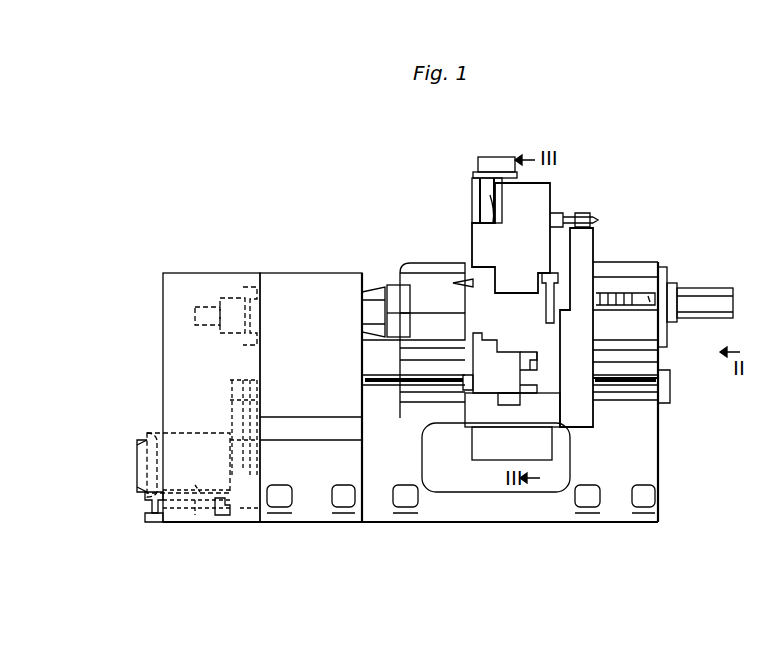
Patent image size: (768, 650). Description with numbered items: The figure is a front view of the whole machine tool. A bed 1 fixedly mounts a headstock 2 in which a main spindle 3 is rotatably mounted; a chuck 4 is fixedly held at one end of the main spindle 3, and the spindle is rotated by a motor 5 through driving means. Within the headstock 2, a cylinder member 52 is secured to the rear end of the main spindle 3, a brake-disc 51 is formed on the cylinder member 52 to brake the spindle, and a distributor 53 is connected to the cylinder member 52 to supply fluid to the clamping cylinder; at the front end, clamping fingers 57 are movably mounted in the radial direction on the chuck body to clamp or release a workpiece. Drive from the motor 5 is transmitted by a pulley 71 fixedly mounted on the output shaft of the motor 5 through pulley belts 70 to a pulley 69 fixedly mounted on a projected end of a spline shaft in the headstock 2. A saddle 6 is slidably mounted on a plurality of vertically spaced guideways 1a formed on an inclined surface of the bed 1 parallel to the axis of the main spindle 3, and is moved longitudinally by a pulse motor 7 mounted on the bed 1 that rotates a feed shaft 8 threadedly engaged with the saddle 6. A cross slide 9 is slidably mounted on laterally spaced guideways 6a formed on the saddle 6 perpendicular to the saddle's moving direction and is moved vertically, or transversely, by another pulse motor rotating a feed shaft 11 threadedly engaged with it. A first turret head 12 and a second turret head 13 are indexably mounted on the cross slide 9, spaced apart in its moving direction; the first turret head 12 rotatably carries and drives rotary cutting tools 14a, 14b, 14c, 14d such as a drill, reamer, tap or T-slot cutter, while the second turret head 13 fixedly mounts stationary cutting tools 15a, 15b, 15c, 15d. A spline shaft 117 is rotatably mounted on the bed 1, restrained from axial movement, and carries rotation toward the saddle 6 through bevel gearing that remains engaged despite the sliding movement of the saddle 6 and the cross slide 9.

The bed 1 is at (375, 505).
The guideways 1a is at (646, 295).
The headstock 2 is at (300, 275).
The main spindle 3 is at (372, 290).
The chuck 4 is at (392, 290).
The motor 5 is at (197, 508).
The saddle 6 is at (585, 410).
The guideways 6a is at (505, 410).
The pulse motor 7 is at (705, 300).
The feed shaft 8 is at (622, 292).
The cross slide 9 is at (490, 405).
The feed shaft 11 is at (500, 195).
The first turret head 12 is at (482, 235).
The second turret head 13 is at (525, 405).
The rotary cutting tool 14a is at (462, 280).
The rotary cutting tool 14b is at (640, 380).
The rotary cutting tool 14c is at (585, 212).
The rotary cutting tool 14d is at (480, 178).
The stationary cutting tool 15a is at (518, 340).
The stationary cutting tool 15b is at (470, 400).
The stationary cutting tool 15c is at (530, 375).
The stationary cutting tool 15d is at (540, 380).
The brake-disc 51 is at (245, 287).
The cylinder member 52 is at (230, 300).
The distributor 53 is at (200, 308).
The clamping fingers 57 is at (410, 265).
The pulley 69 is at (232, 392).
The pulley belts 70 is at (232, 422).
The pulley 71 is at (250, 478).
The spline shaft 117 is at (628, 382).